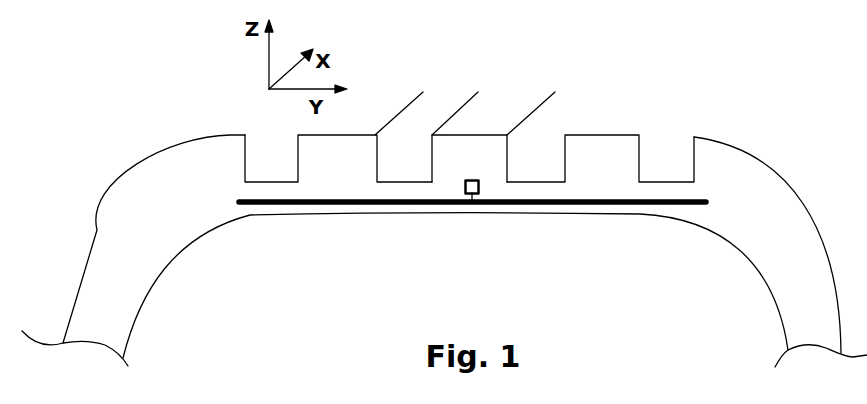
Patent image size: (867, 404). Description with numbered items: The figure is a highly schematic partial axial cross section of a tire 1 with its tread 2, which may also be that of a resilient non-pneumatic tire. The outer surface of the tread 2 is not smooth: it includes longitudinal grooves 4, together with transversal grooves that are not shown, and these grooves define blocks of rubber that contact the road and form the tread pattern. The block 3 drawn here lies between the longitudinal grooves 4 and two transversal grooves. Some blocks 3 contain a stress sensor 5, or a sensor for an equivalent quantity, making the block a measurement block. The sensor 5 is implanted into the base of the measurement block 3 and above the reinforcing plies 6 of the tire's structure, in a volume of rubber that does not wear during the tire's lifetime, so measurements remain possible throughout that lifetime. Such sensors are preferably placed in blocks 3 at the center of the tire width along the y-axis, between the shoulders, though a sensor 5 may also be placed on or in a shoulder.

The tire 1 is at (213, 120).
The tread 2 is at (605, 128).
The block 3 is at (490, 163).
The longitudinal grooves 4 is at (412, 150).
The stress sensor 5 is at (463, 205).
The reinforcing plies 6 is at (273, 207).